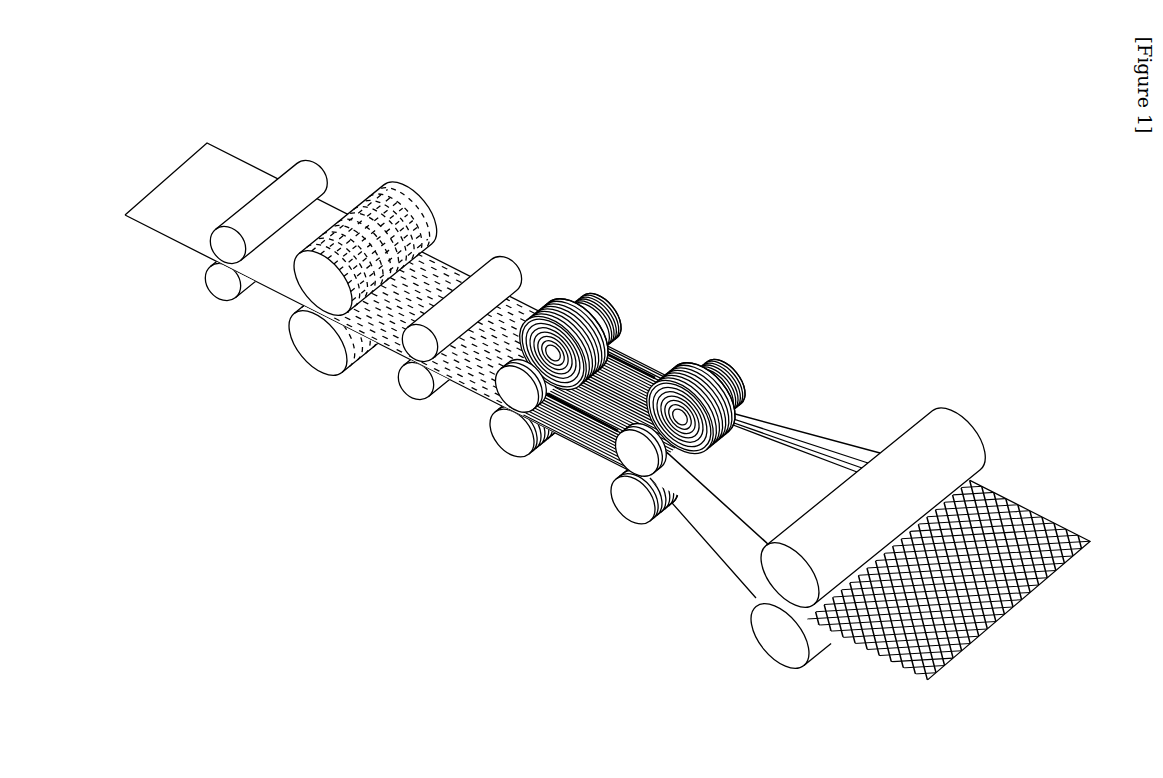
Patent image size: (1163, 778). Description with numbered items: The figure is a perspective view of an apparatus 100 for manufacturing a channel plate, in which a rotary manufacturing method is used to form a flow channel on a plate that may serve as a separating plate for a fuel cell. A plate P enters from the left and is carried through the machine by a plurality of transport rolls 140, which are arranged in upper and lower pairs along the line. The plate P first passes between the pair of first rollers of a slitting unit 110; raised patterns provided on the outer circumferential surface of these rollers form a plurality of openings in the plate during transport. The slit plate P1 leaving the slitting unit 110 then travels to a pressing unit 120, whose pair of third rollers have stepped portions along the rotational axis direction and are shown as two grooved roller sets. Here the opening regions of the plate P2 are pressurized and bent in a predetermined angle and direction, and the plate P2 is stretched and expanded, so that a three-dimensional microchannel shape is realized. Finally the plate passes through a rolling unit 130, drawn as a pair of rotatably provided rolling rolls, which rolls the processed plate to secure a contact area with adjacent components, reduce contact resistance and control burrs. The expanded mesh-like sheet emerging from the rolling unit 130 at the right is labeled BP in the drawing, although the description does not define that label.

The apparatus for manufacturing a channel plate 100 is at (122, 66).
The slitting unit 110 is at (415, 173).
The pressing unit 120 is at (608, 297).
The rolling unit 130 is at (970, 402).
The transport rolls 140 is at (317, 150).
The plate P is at (118, 200).
The plate passing through the slitting unit P1 is at (385, 355).
The plate passing through the pressing unit P2 is at (585, 458).
The expanded mesh plate (product) BP is at (1003, 622).